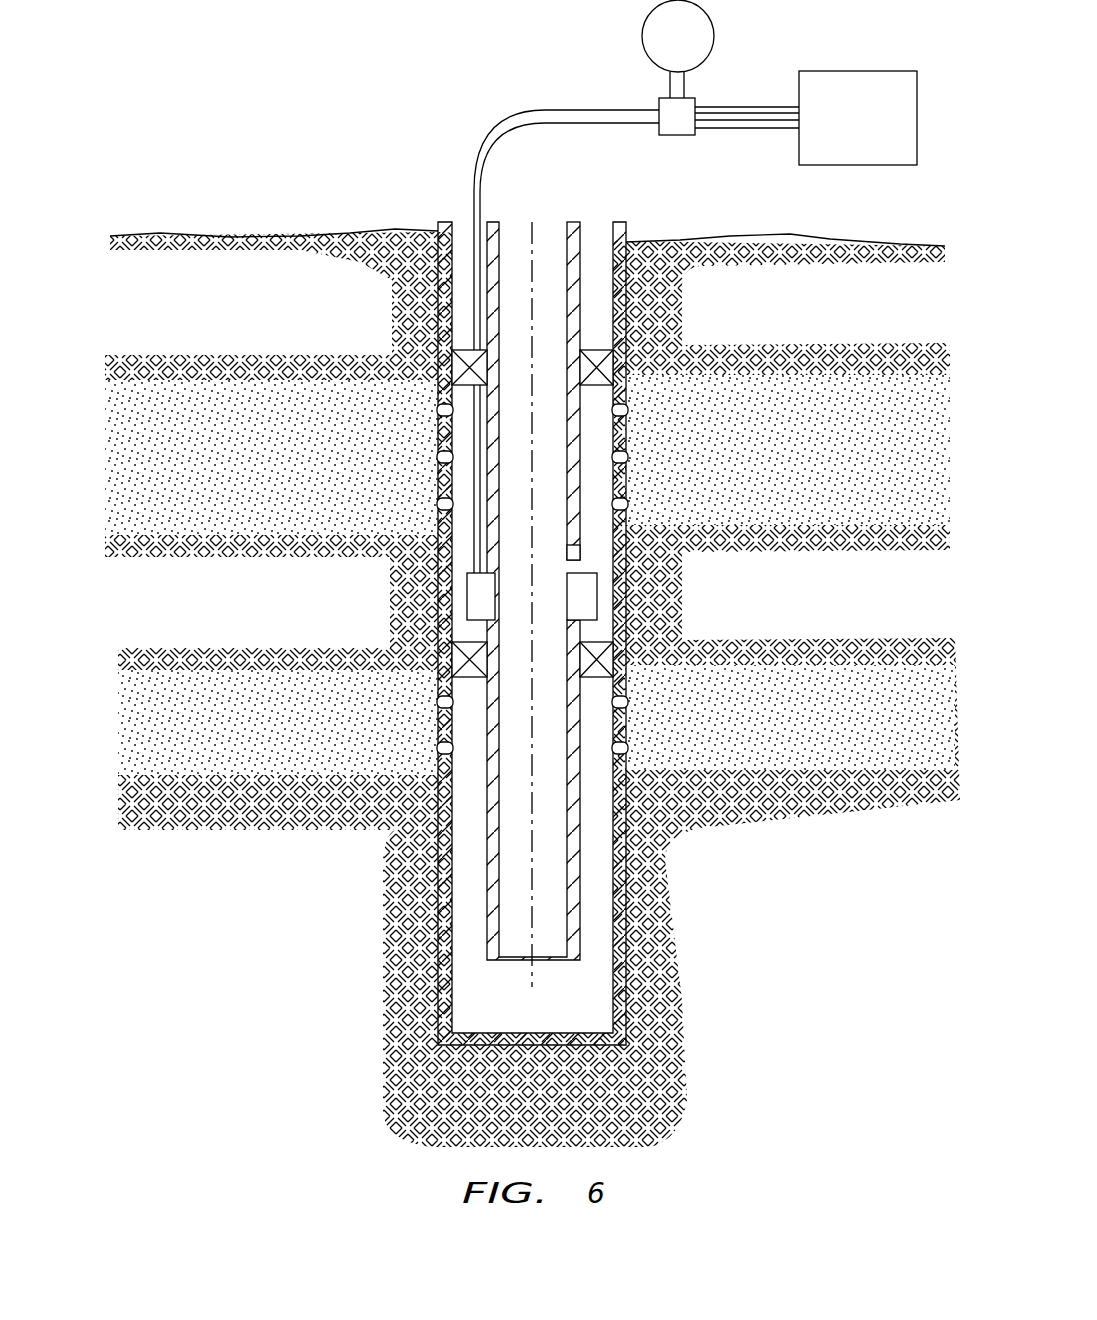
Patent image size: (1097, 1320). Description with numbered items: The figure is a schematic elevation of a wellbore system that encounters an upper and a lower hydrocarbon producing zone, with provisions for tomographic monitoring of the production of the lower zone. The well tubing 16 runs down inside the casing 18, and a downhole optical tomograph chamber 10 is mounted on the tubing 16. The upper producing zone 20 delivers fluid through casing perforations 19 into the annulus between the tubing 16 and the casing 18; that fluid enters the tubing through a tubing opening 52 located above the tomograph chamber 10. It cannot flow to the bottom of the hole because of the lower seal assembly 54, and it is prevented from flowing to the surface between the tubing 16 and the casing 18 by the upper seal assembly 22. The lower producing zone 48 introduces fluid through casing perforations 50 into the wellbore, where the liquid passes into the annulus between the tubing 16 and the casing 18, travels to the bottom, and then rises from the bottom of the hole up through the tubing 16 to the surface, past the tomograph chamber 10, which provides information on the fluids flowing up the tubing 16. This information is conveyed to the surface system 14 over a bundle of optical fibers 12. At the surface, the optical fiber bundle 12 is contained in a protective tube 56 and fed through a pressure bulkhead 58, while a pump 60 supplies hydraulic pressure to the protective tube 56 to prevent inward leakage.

The optical tomograph chamber 10 is at (487, 585).
The bundle of optical fibers 12 is at (748, 95).
The surface system 14 is at (845, 131).
The well tubing 16 is at (572, 221).
The casing 18 is at (444, 221).
The casing perforations 19 is at (628, 409).
The producing zone 20 is at (243, 478).
The seal assembly 22 is at (480, 368).
The producing zone 48 is at (243, 736).
The casing perforations 50 is at (628, 702).
The tubing opening 52 is at (565, 560).
The seal assembly 54 is at (480, 660).
The protective tube 56 is at (582, 96).
The pressure bulkhead 58 is at (677, 135).
The pump 60 is at (664, 48).